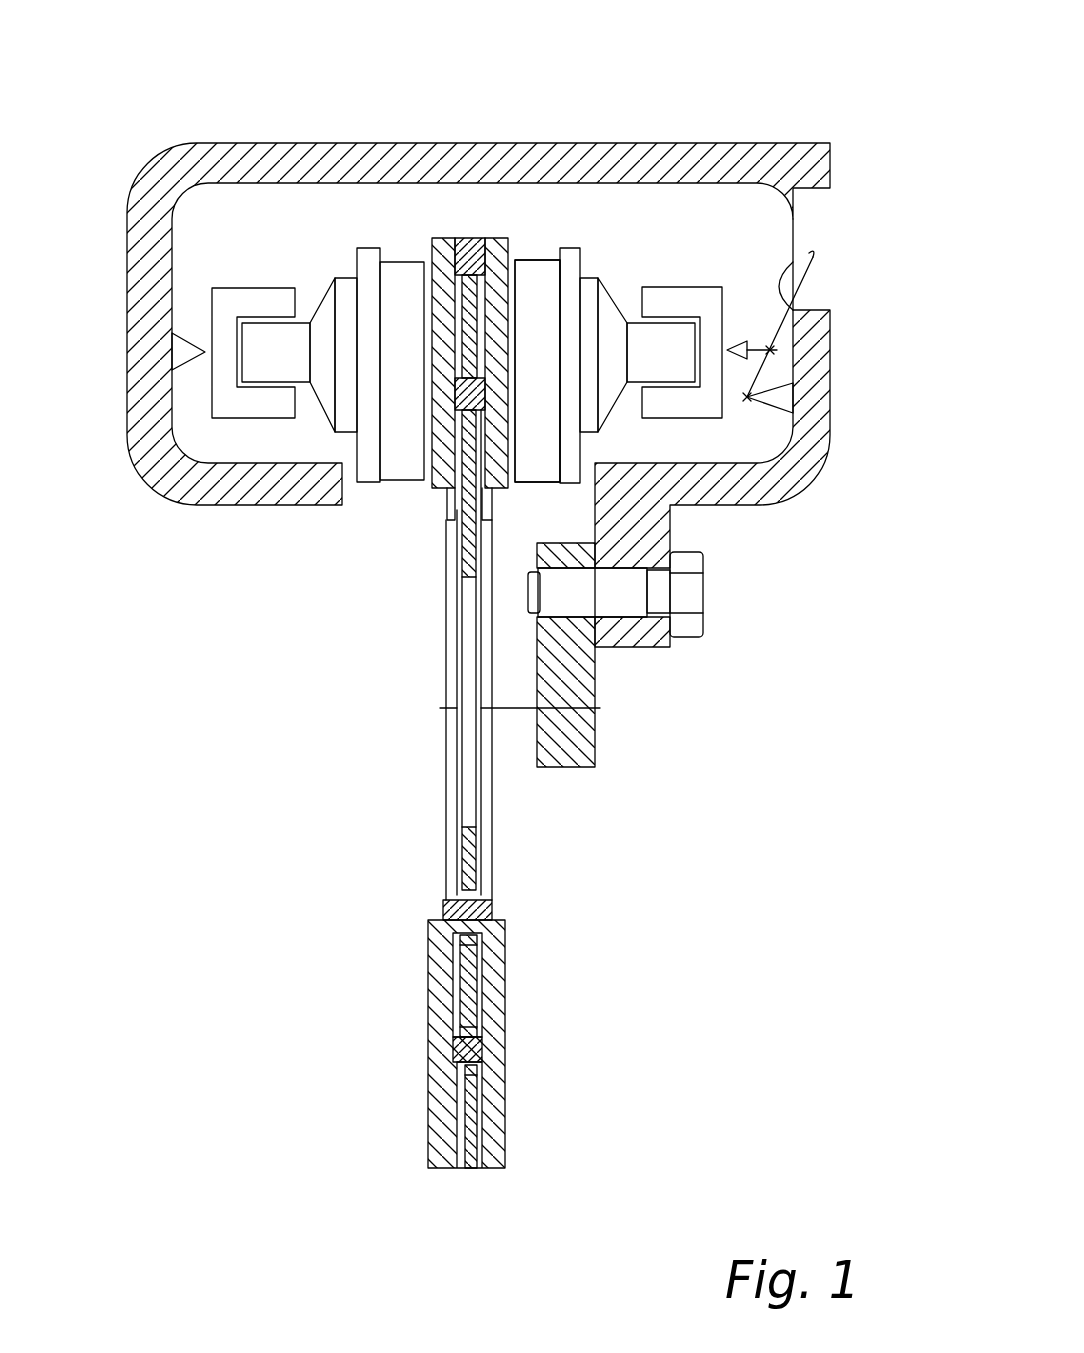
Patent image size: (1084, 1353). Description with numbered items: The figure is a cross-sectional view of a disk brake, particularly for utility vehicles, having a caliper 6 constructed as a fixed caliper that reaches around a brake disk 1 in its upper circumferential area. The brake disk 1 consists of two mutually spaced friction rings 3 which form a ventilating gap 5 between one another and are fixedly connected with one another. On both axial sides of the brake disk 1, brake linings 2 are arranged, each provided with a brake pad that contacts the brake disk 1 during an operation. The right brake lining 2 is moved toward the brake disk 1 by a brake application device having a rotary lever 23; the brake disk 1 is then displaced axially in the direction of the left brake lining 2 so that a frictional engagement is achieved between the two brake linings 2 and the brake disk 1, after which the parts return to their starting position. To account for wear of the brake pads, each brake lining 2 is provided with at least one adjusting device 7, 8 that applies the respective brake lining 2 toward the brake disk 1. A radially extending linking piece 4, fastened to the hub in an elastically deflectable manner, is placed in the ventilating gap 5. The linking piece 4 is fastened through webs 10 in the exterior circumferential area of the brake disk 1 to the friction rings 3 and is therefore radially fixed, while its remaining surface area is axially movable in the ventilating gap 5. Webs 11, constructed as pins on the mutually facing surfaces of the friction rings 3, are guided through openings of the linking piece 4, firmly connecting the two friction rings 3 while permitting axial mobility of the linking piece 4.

The brake disk 1 is at (424, 535).
The brake linings 2 is at (415, 240).
The friction rings 3 is at (443, 422).
The linking piece 4 is at (445, 850).
The ventilating gap 5 is at (453, 988).
The caliper 6 is at (354, 165).
The adjusting device 7 is at (667, 268).
The adjusting device 8 is at (246, 272).
The webs 10 is at (512, 300).
The webs 11 is at (503, 410).
The rotary lever 23 is at (805, 244).